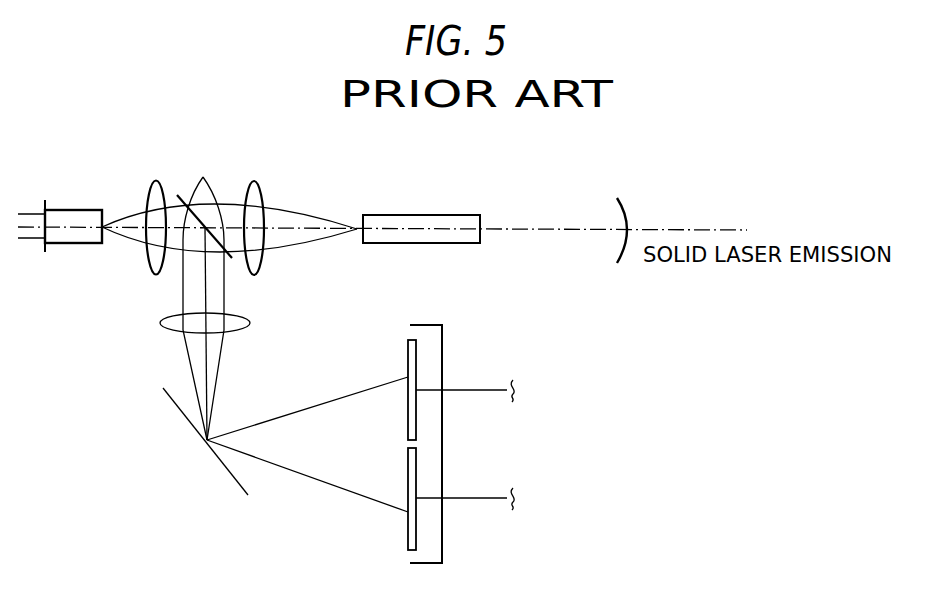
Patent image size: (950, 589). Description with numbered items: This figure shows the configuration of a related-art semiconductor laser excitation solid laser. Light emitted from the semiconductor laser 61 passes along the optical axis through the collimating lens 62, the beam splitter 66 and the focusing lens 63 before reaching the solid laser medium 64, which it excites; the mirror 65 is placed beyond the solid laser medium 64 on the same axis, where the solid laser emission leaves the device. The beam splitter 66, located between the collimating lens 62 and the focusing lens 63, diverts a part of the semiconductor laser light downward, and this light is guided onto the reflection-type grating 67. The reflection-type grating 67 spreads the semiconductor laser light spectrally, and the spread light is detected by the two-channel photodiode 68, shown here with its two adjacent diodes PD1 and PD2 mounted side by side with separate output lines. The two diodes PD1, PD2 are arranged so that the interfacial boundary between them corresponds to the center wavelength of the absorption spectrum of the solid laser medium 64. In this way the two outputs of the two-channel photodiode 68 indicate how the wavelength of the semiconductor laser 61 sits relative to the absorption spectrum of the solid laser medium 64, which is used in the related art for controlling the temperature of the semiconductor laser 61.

The semiconductor laser 61 is at (72, 210).
The collimating lens 62 is at (154, 181).
The focusing lens 63 is at (256, 181).
The solid laser medium 64 is at (425, 215).
The mirror 65 is at (622, 205).
The beam splitter 66 is at (180, 194).
The reflection-type grating 67 is at (180, 410).
The two-channel photodiode 68 is at (417, 444).
The photodiode 1 PD1 is at (405, 355).
The photodiode 2 PD2 is at (405, 530).